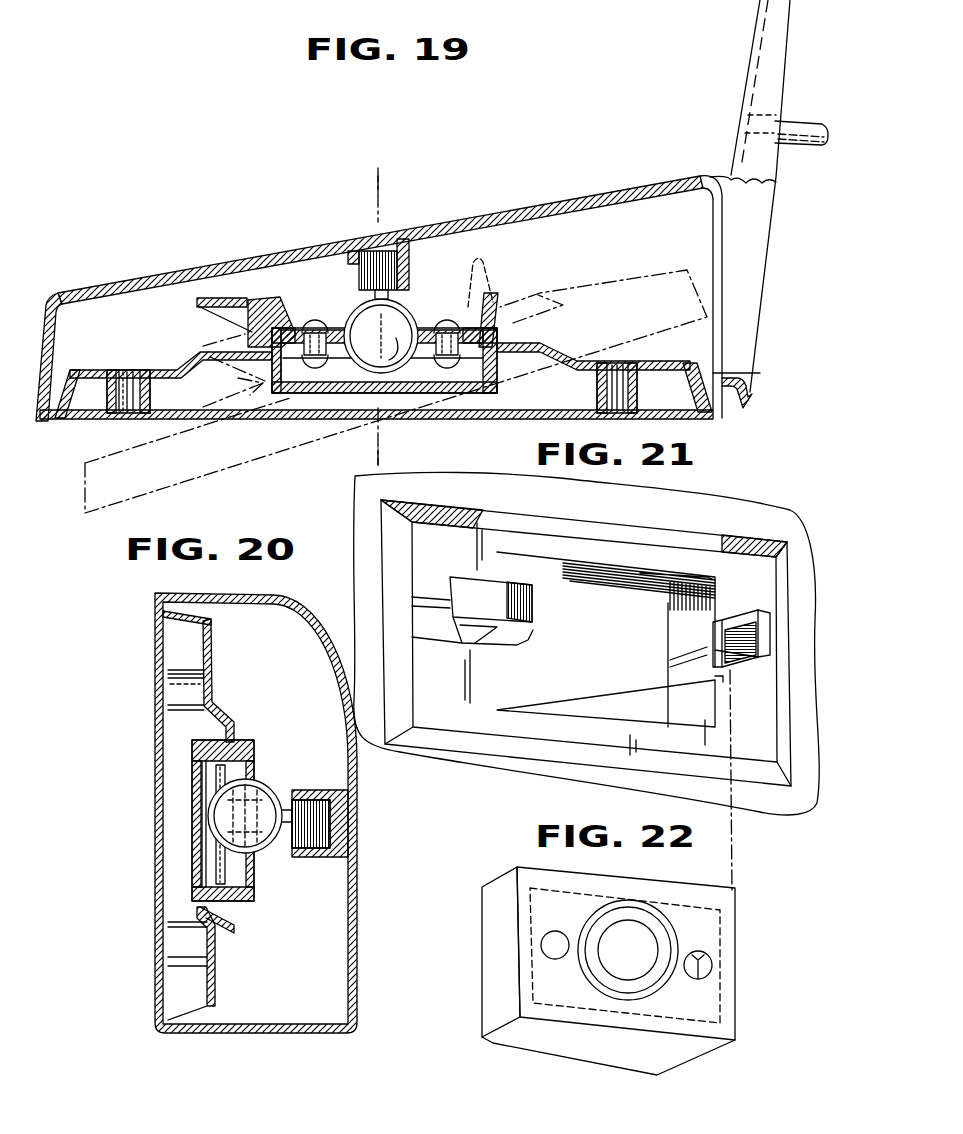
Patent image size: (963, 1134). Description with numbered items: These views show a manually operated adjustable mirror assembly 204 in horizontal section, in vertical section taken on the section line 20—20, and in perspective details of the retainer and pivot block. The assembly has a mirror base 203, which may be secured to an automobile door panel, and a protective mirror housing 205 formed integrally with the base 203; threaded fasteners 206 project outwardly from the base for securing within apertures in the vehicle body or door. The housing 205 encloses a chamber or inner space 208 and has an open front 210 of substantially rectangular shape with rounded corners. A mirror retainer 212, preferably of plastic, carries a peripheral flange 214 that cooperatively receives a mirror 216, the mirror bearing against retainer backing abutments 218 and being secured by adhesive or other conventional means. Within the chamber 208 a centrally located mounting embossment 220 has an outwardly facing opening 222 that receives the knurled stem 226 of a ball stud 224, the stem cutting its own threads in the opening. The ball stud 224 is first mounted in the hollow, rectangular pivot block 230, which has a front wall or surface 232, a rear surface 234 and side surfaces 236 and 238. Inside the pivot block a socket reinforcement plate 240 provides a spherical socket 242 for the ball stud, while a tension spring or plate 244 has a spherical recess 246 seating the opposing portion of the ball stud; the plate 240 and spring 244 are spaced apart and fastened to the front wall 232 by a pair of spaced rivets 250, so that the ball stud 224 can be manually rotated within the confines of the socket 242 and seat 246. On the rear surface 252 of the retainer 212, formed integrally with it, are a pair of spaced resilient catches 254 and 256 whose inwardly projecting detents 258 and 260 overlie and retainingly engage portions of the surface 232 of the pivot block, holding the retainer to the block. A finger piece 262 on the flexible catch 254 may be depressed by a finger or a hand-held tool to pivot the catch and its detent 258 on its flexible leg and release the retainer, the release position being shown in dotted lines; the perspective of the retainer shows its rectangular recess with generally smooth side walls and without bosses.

In FIG. 19, the section line 20 is at (410, 184).
In FIG. 19, the mirror base 203 is at (744, 82).
In FIG. 19, the adjustable mirror assembly 204 is at (320, 226).
In FIG. 19, the mirror housing 205 is at (586, 190).
In FIG. 20, the mirror housing 205 is at (274, 598).
In FIG. 19, the threaded fasteners 206 is at (808, 145).
In FIG. 19, the chamber 208 is at (698, 348).
In FIG. 19, the open front 210 is at (718, 416).
In FIG. 19, the mirror retainer 212 is at (64, 424).
In FIG. 19, the peripheral flange 214 is at (746, 382).
In FIG. 19, the mirror 216 is at (695, 418).
In FIG. 19, the retainer backing abutments 218 is at (125, 416).
In FIG. 19, the mounting embossment 220 is at (409, 256).
In FIG. 20, the mounting embossment 220 is at (330, 852).
In FIG. 19, the outwardly facing opening 222 is at (362, 263).
In FIG. 19, the ball stud 224 is at (394, 312).
In FIG. 20, the ball stud 224 is at (260, 790).
In FIG. 19, the knurled stem 226 is at (375, 278).
In FIG. 20, the knurled stem 226 is at (332, 823).
In FIG. 19, the pivot block 230 is at (372, 392).
In FIG. 20, the pivot block 230 is at (245, 740).
In FIG. 22, the pivot block 230 is at (742, 957).
In FIG. 19, the front wall 232 is at (472, 275).
In FIG. 22, the front wall 232 is at (727, 917).
In FIG. 19, the rear surface 234 is at (456, 388).
In FIG. 22, the side surface 236 is at (498, 987).
In FIG. 19, the side surface 238 is at (415, 342).
In FIG. 22, the side surface 238 is at (592, 1057).
In FIG. 19, the socket reinforcement plate 240 is at (352, 397).
In FIG. 20, the socket reinforcement plate 240 is at (197, 780).
In FIG. 19, the spherical socket 242 is at (347, 330).
In FIG. 22, the spherical socket 242 is at (602, 986).
In FIG. 19, the tension spring 244 is at (293, 388).
In FIG. 20, the tension spring 244 is at (215, 868).
In FIG. 19, the spherical recess 246 is at (381, 336).
In FIG. 19, the rivets 250 is at (460, 366).
In FIG. 22, the rivets 250 is at (554, 938).
In FIG. 19, the rear surface of mirror retainer 252 is at (212, 346).
In FIG. 21, the rear surface of mirror retainer 252 is at (740, 580).
In FIG. 19, the resilient catch 254 is at (251, 300).
In FIG. 21, the resilient catch 254 is at (475, 590).
In FIG. 19, the resilient catch 256 is at (498, 305).
In FIG. 21, the resilient catch 256 is at (747, 662).
In FIG. 19, the detent 258 is at (294, 327).
In FIG. 21, the detent 258 is at (523, 645).
In FIG. 19, the detent 260 is at (500, 330).
In FIG. 21, the detent 260 is at (723, 678).
In FIG. 19, the finger piece 262 is at (203, 298).